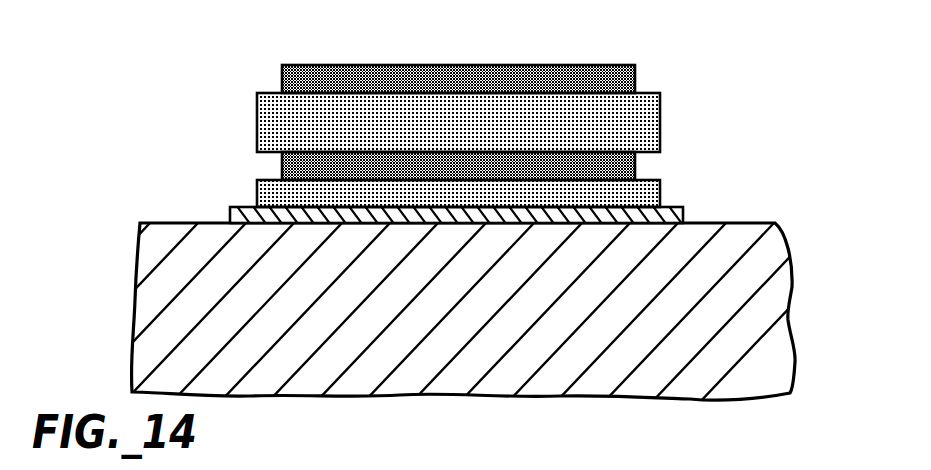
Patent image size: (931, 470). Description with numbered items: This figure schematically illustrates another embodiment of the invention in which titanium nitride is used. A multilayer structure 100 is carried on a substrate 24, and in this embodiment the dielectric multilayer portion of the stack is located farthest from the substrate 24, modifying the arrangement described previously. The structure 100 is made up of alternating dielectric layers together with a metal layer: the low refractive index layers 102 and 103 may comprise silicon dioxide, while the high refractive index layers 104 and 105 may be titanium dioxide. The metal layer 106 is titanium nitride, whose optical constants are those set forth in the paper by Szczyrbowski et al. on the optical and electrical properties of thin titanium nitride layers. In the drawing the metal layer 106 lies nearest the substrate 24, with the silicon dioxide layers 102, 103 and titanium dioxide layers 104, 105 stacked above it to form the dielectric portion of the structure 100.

The structure 100 is at (504, 112).
The low refractive index layer 102 is at (638, 81).
The low refractive index layer 103 is at (638, 170).
The high refractive index layer 104 is at (653, 130).
The high refractive index layer 105 is at (655, 197).
The metal layer 106 is at (678, 221).
The substrate 24 is at (787, 318).